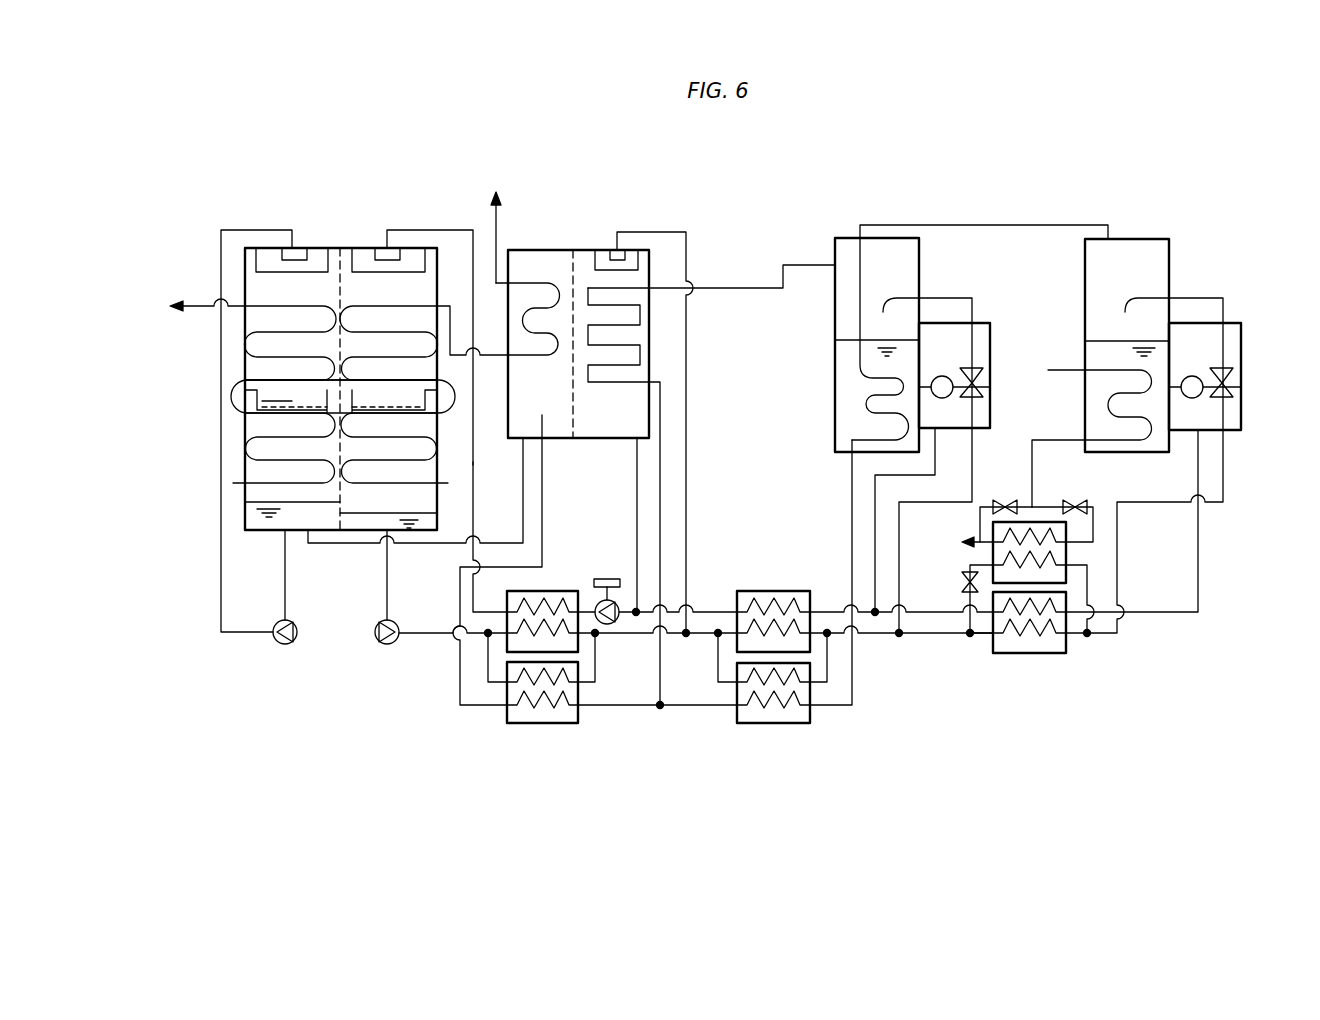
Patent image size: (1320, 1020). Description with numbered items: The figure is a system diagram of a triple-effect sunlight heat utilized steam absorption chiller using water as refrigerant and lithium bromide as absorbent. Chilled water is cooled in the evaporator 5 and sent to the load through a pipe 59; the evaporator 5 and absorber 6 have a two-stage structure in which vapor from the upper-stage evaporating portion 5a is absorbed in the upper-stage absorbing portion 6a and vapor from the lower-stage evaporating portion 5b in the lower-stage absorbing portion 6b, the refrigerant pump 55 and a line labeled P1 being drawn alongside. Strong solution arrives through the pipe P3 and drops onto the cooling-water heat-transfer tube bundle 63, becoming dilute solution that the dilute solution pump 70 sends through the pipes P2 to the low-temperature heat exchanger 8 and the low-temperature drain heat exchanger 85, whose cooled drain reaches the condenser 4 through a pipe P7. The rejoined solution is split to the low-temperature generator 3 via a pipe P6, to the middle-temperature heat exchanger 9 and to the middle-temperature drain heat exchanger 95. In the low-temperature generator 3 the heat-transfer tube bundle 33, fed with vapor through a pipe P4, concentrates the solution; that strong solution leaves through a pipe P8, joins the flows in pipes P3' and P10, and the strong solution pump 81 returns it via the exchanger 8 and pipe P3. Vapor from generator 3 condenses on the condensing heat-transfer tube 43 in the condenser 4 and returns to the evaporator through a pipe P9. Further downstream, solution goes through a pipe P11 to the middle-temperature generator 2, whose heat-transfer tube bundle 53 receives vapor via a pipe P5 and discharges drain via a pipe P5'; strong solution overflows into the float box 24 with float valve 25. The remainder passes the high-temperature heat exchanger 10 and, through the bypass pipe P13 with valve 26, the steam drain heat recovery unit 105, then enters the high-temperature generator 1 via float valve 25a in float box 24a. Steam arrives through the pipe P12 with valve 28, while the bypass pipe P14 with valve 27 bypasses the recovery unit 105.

The high-temperature generator 1 is at (1143, 239).
The middle-temperature generator 2 is at (888, 238).
The low-temperature generator 3 is at (620, 250).
The condenser 4 is at (525, 250).
The evaporator 5 is at (313, 248).
The upper-stage evaporating portion 5a is at (280, 318).
The lower-stage evaporating portion 5b is at (278, 450).
The absorber 6 is at (367, 248).
The upper-stage absorbing portion 6a is at (398, 292).
The lower-stage absorbing portion 6b is at (387, 450).
The low-temperature heat exchanger 8 is at (578, 640).
The middle-temperature heat exchanger 9 is at (720, 642).
The high-temperature heat exchanger 10 is at (1036, 655).
The float box 24 is at (945, 323).
The float box 24a is at (1195, 323).
The float valve 25 is at (977, 364).
The float valve 25a is at (1233, 364).
The valve 26 is at (964, 582).
The valve 27 is at (1002, 503).
The valve 28 is at (1075, 503).
The heat-transfer tube bundle 33 is at (608, 383).
The condensing heat-transfer tube 43 is at (537, 283).
The heat-transfer tube bundle 53 is at (860, 398).
The refrigerant pump 55 is at (285, 645).
The pipe 59 is at (193, 300).
The heat-transfer tube bundle 63 is at (403, 330).
The dilute solution pump 70 is at (387, 645).
The strong solution pump 81 is at (607, 579).
The low-temperature drain heat exchanger 85 is at (540, 725).
The middle-temperature drain heat exchanger 95 is at (773, 725).
The steam drain heat recovery unit 105 is at (1067, 556).
The pipe P1 is at (221, 578).
The pipes P2 is at (430, 634).
The pipe P3 is at (493, 483).
The pipe P3' is at (1132, 553).
The pipe P4 is at (807, 265).
The pipe P5 is at (984, 199).
The pipe P5' is at (816, 572).
The pipe P6 is at (686, 515).
The pipe P7 is at (480, 707).
The pipe P8 is at (637, 500).
The pipe P9 is at (430, 544).
The pipe P10 is at (875, 490).
The pipe P11 is at (938, 467).
The pipe P12 is at (1057, 368).
The bypass pipe P13 is at (977, 640).
The bypass pipe P14 is at (1022, 505).